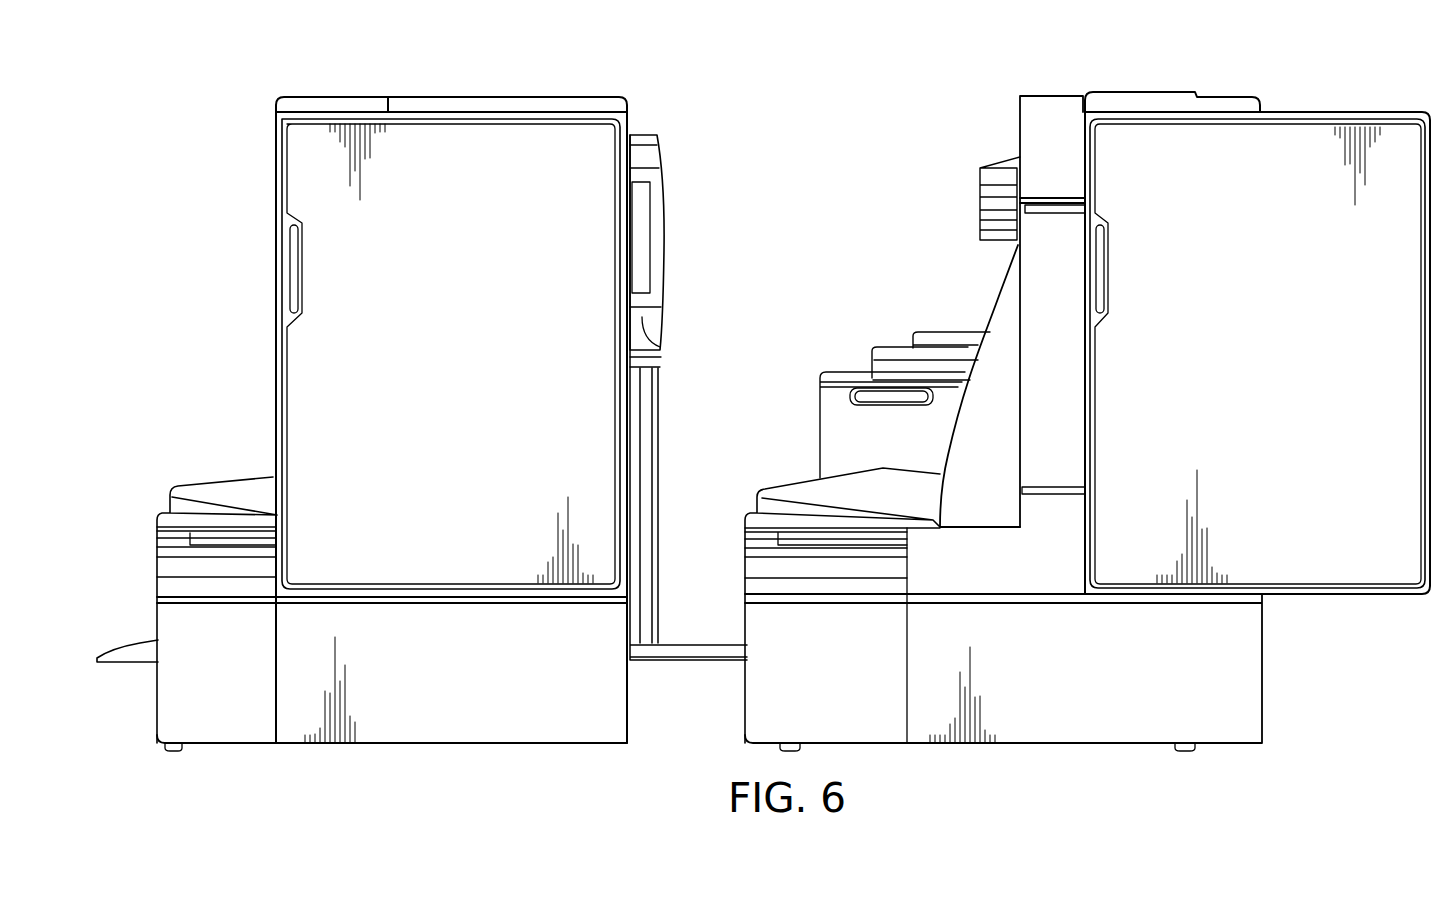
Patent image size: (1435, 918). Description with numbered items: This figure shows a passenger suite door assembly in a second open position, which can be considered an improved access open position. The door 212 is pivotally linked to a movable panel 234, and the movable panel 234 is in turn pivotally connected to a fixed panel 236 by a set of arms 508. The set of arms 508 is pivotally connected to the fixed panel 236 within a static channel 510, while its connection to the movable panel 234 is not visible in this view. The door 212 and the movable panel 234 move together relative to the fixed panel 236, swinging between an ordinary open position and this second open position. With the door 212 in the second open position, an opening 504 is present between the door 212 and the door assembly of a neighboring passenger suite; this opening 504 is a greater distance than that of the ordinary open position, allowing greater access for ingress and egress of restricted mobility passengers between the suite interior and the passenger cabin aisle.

The opening 504 is at (1080, 83).
The door 212 is at (1316, 105).
The movable panel 234 is at (1147, 100).
The fixed panel 236 is at (1030, 120).
The static channel 510 is at (1060, 203).
The set of arms 508 is at (1043, 210).